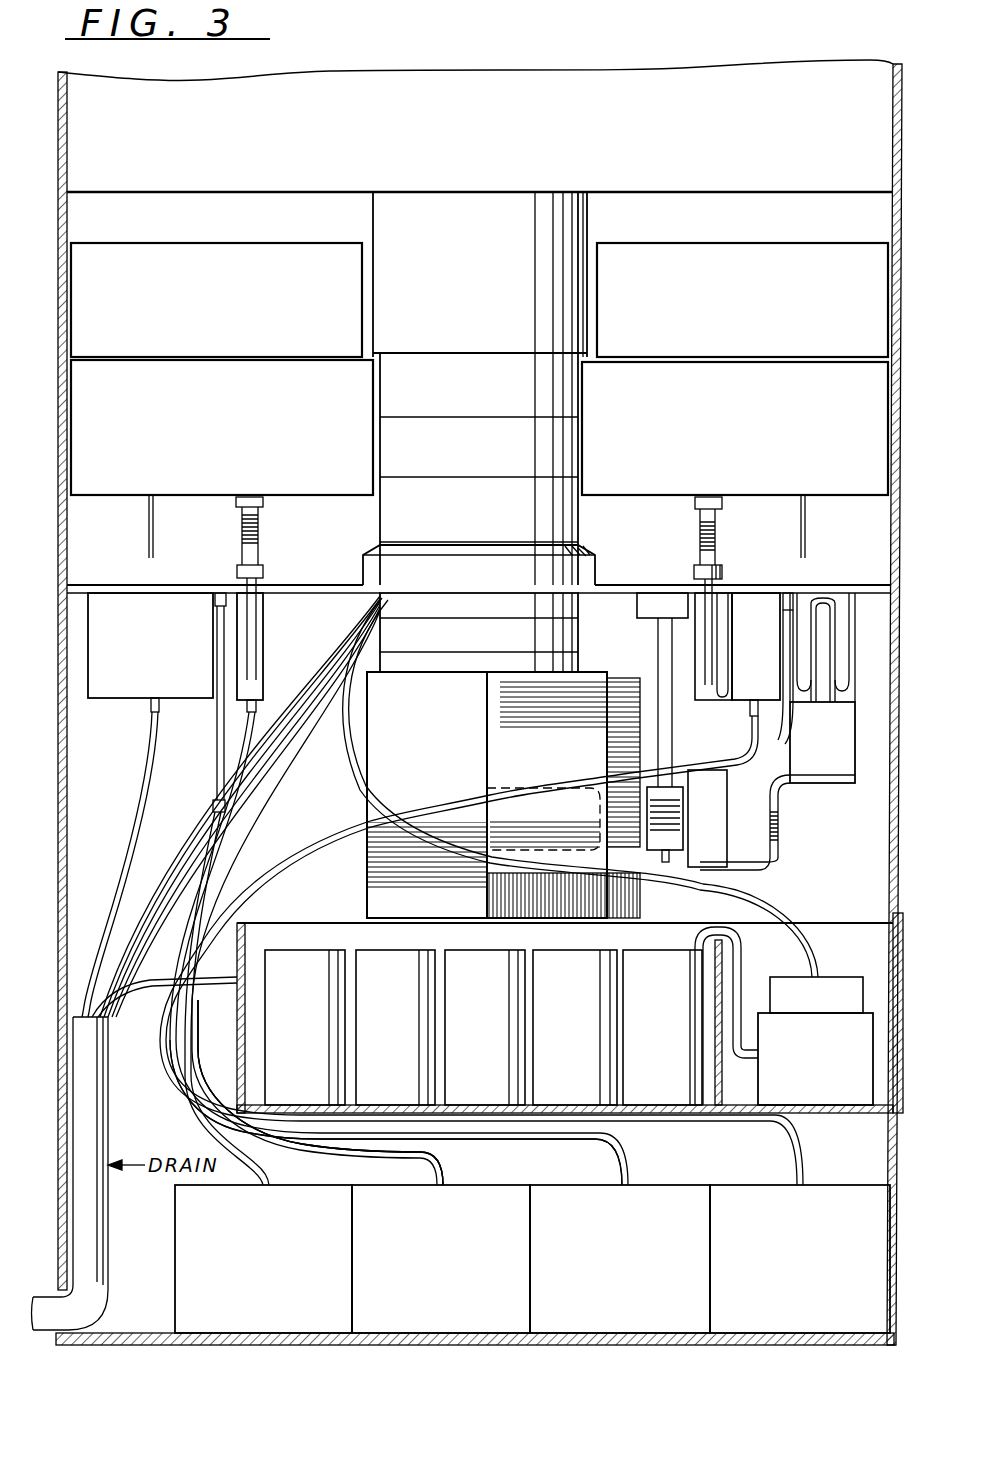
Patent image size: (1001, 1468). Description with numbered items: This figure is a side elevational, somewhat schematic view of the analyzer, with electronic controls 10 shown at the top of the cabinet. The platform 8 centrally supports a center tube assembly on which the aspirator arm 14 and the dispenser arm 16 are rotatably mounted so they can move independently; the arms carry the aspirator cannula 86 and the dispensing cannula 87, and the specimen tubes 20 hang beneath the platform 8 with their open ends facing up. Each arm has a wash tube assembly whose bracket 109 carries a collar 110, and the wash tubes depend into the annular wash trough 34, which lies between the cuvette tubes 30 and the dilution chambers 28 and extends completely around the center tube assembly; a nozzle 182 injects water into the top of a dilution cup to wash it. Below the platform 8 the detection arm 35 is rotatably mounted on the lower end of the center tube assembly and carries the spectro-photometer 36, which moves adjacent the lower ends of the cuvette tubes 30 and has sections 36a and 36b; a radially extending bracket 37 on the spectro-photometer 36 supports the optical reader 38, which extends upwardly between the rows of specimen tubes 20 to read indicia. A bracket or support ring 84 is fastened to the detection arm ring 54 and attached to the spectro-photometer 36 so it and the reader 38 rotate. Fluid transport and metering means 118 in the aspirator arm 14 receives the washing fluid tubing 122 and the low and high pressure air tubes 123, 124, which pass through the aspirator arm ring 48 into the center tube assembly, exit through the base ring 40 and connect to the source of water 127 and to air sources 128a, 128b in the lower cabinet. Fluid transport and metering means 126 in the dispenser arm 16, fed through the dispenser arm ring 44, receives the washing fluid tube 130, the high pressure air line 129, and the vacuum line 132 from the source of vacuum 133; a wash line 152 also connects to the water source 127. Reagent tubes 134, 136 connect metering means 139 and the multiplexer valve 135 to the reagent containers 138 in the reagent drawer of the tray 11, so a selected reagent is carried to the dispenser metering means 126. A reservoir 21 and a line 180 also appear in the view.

The electronic controls 10 is at (458, 172).
The fluid transport and metering means 126 is at (193, 345).
The fluid transport and metering means 118 is at (713, 345).
The dispenser arm 16 is at (206, 475).
The aspirator arm 14 is at (710, 482).
The aspirator arm ring 48 is at (453, 400).
The dispenser arm ring 44 is at (458, 459).
The base ring 40 is at (592, 562).
The detection arm ring 54 is at (462, 648).
The dispensing cannula 87 is at (153, 530).
The aspirator cannula 86 is at (805, 527).
The bracket 109 is at (258, 527).
The collar 110 is at (722, 575).
The platform 8 is at (312, 582).
The vacuum reservoir 21 is at (138, 652).
The pipe 180 is at (221, 592).
The vacuum line 132 is at (198, 1124).
The annular wash trough 34 is at (263, 635).
The dilution chambers 28 is at (740, 648).
The nozzle 182 is at (790, 600).
The specimen tubes 20 is at (805, 641).
The optical reader 38 is at (808, 752).
The radially extending bracket 37 is at (778, 831).
The cuvette tubes 30 is at (677, 732).
The block section 36b is at (724, 824).
The spectro-photometer 36 is at (406, 770).
The bracket or support ring 84 is at (448, 676).
The detection arm 35 is at (500, 764).
The block chamber 36a is at (616, 818).
The reagent tube 134 is at (803, 932).
The multiplexer valve 135 is at (786, 912).
The reagent tube 136 is at (741, 1031).
The metering means 139 is at (830, 985).
The tray 11 is at (903, 938).
The reagent containers 138 is at (644, 1034).
The low pressure air tube 123 is at (760, 1156).
The high pressure air tube 124 is at (622, 1165).
The high pressure air line 129 is at (447, 1112).
The washing fluid tubing 122 is at (437, 1168).
The washing fluid tube 130 is at (390, 1092).
The wash line 152 is at (390, 1092).
The source of vacuum 133 is at (238, 1317).
The source of water 127 is at (418, 1320).
The air source 128b is at (578, 1330).
The low pressure air source 128a is at (756, 1330).